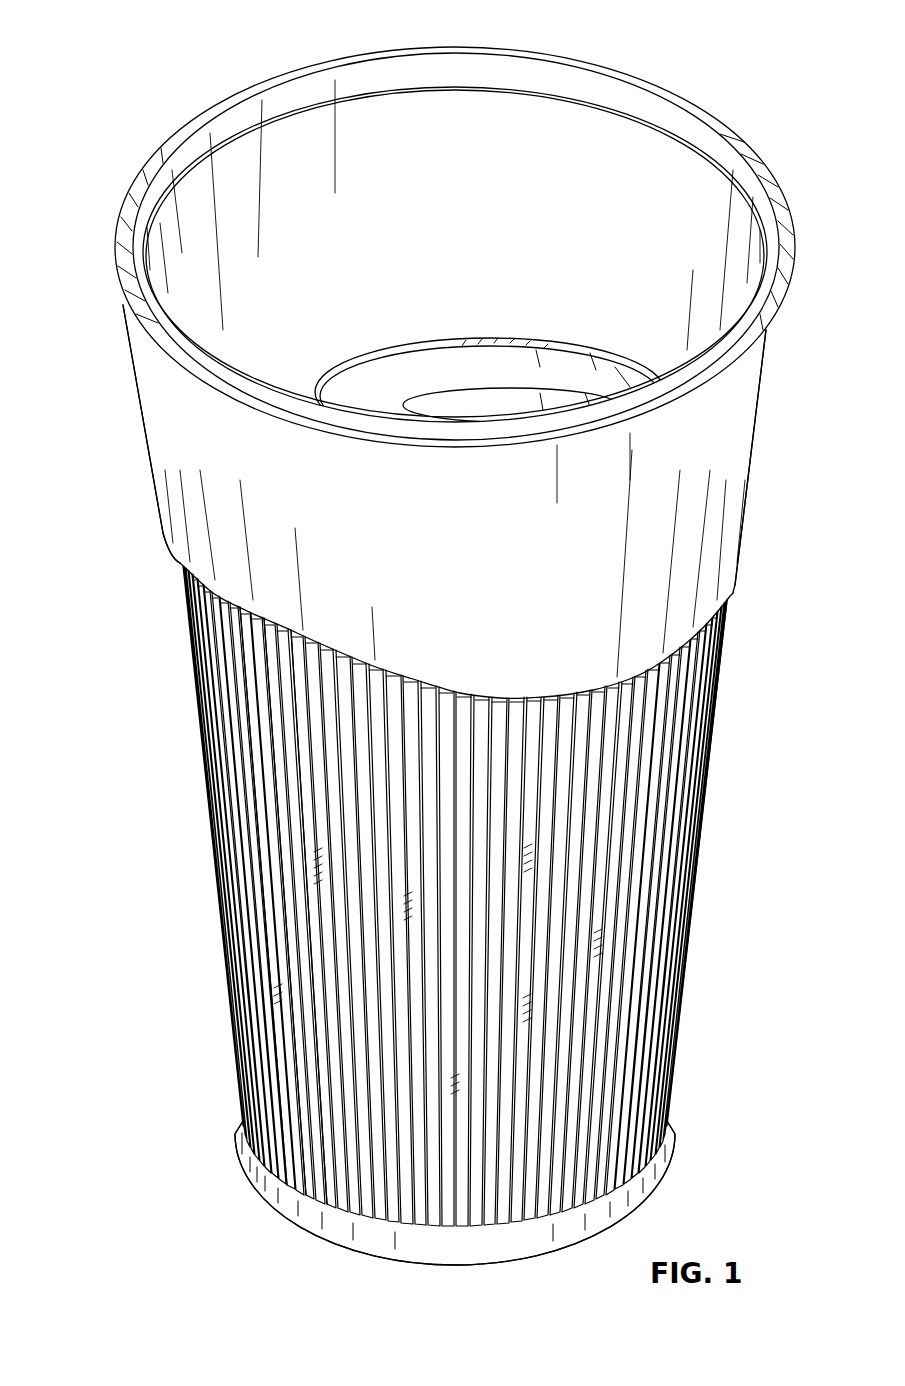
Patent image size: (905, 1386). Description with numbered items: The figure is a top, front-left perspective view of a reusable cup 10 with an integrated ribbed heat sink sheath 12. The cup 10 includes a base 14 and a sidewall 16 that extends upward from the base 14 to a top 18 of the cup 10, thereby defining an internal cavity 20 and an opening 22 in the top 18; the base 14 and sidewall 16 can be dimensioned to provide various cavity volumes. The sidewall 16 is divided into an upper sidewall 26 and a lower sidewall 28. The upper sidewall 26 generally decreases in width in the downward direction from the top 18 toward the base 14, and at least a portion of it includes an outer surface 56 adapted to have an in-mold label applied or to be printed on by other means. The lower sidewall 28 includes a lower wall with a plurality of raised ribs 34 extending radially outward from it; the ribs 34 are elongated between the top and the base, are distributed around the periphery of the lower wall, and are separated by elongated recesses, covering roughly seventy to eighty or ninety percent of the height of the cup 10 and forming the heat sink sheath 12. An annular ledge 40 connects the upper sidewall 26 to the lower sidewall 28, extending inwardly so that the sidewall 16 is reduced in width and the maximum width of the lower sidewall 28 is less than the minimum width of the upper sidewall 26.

The reusable cup 10 is at (124, 55).
The integrated ribbed heat sink sheath 12 is at (712, 770).
The base 14 is at (672, 1138).
The sidewall 16 is at (743, 543).
The top 18 is at (293, 77).
The internal cavity 20 is at (317, 324).
The opening 22 is at (567, 310).
The upper sidewall 26 is at (763, 402).
The lower sidewall 28 is at (692, 920).
The raised ribs 34 is at (263, 737).
The annular ledge 40 is at (437, 377).
The outer surface 56 is at (697, 493).